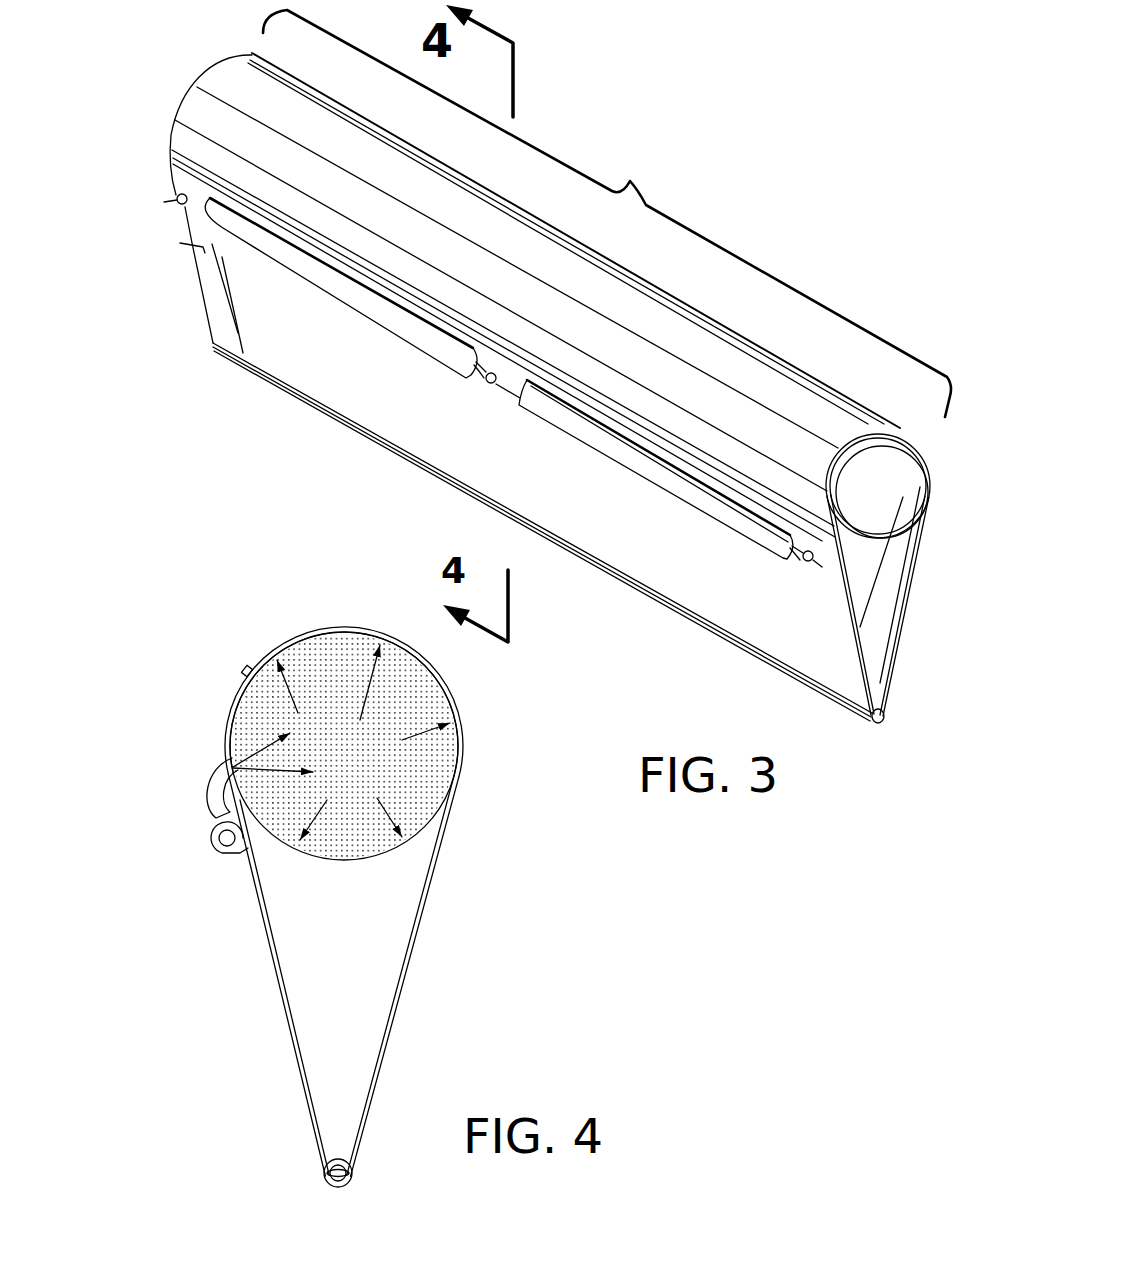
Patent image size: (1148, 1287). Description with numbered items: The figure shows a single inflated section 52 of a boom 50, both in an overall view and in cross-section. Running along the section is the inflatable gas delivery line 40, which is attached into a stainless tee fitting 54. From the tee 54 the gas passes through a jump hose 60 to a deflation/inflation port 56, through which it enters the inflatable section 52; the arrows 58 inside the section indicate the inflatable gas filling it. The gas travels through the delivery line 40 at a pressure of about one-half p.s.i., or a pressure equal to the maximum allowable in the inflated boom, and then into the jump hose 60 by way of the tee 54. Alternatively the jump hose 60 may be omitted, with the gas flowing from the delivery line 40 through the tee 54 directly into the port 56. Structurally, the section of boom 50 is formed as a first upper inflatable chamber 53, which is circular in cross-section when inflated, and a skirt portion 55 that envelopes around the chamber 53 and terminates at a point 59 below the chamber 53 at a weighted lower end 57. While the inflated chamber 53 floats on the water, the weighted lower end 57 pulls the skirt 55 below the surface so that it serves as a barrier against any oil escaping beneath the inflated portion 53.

In FIG. 3, the inflatable gas delivery line 40 is at (482, 378).
In FIG. 4, the inflatable gas delivery line 40 is at (227, 852).
In FIG. 3, the boom 50 is at (188, 322).
In FIG. 4, the boom 50 is at (478, 693).
In FIG. 3, the inflatable section 52 is at (643, 337).
In FIG. 4, the inflatable section 52 is at (231, 710).
In FIG. 3, the first upper inflatable chamber 53 is at (883, 458).
In FIG. 4, the first upper inflatable chamber 53 is at (243, 668).
In FIG. 3, the stainless tee fitting 54 is at (180, 192).
In FIG. 4, the stainless tee fitting 54 is at (212, 820).
In FIG. 3, the skirt portion 55 is at (885, 568).
In FIG. 4, the skirt portion 55 is at (279, 980).
In FIG. 3, the deflation/inflation port 56 is at (480, 387).
In FIG. 4, the deflation/inflation port 56 is at (233, 760).
In FIG. 3, the weighted lower end 57 is at (885, 722).
In FIG. 4, the weighted lower end 57 is at (353, 1174).
In FIG. 4, the inflatable gas arrows 58 is at (297, 713).
In FIG. 4, the point 59 is at (324, 1175).
In FIG. 4, the jump hose 60 is at (208, 794).